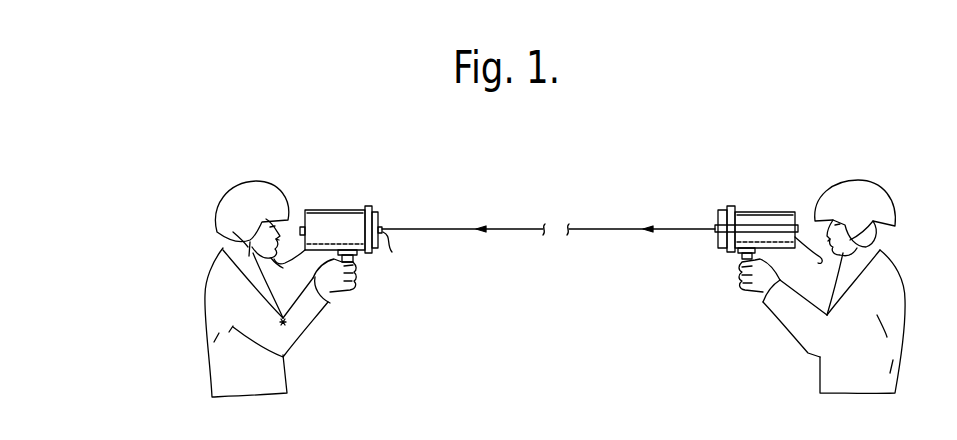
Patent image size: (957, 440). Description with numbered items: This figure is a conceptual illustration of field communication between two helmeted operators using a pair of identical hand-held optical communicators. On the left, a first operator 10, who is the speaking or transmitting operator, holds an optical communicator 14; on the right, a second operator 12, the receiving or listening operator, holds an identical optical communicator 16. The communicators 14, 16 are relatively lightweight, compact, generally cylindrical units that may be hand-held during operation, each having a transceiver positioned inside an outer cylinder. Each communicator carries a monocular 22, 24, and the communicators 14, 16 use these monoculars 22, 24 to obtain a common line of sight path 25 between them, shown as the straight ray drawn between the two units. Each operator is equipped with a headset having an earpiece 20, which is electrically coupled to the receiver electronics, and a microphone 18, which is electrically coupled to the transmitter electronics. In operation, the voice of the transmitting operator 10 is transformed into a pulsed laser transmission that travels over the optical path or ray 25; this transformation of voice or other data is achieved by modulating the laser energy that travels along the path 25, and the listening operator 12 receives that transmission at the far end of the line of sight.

The first operator 10 is at (285, 178).
The second operator 12 is at (898, 185).
The optical communicator 14 is at (360, 198).
The optical communicator 16 is at (757, 202).
The microphone 18 is at (817, 258).
The earpiece 20 is at (222, 240).
The monocular 22 is at (400, 249).
The monocular 24 is at (728, 253).
The line of sight path 25 is at (607, 229).